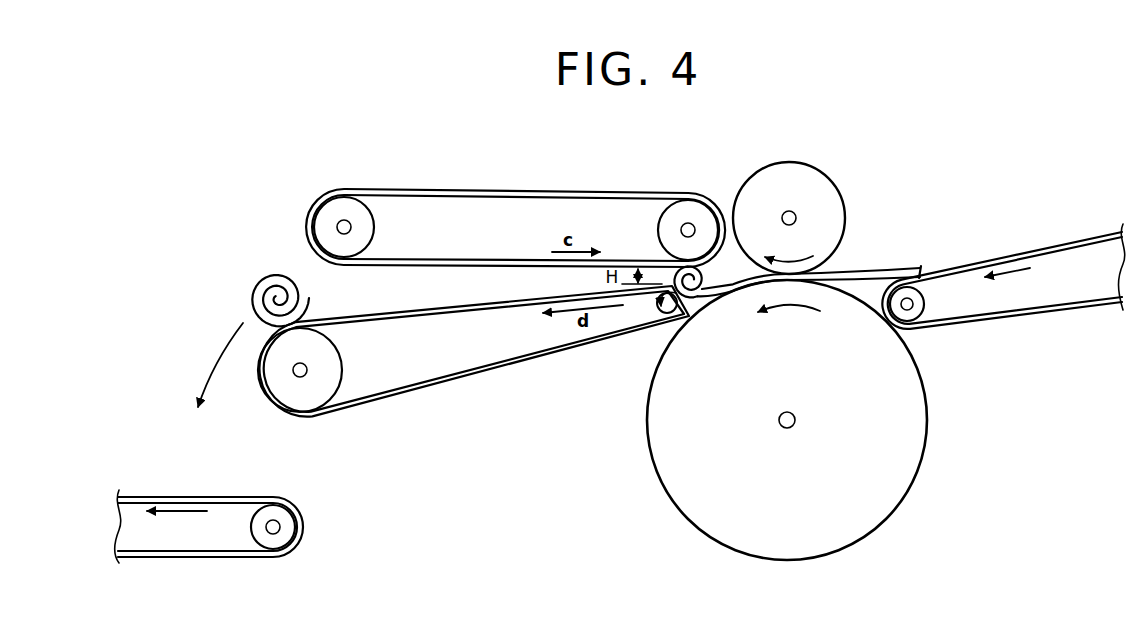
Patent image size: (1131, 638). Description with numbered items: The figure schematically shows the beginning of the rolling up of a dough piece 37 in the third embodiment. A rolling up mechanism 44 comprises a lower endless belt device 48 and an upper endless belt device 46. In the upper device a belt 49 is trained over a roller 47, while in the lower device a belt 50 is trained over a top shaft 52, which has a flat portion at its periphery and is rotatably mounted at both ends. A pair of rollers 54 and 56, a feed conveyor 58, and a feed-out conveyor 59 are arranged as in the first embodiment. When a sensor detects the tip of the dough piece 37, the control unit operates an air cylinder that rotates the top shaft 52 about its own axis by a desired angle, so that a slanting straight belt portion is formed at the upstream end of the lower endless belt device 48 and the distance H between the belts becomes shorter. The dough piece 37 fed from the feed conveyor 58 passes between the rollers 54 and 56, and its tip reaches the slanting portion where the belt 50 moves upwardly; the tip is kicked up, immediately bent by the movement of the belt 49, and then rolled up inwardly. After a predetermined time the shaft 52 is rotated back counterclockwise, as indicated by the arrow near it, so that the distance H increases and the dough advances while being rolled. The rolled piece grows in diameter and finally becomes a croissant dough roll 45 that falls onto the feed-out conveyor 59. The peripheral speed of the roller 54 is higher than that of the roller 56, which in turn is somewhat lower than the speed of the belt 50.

The dough piece 37 is at (916, 265).
The rolling up mechanism 44 is at (277, 250).
The croissant dough roll 45 is at (248, 280).
The upper endless belt device 46 is at (500, 186).
The roller 47 is at (683, 217).
The lower endless belt device 48 is at (492, 386).
The belt 49 is at (587, 191).
The belt 50 is at (567, 358).
The top shaft 52 is at (673, 311).
The roller 54 is at (800, 166).
The roller 56 is at (928, 422).
The feed conveyor 58 is at (1053, 231).
The feed-out conveyor 59 is at (202, 561).